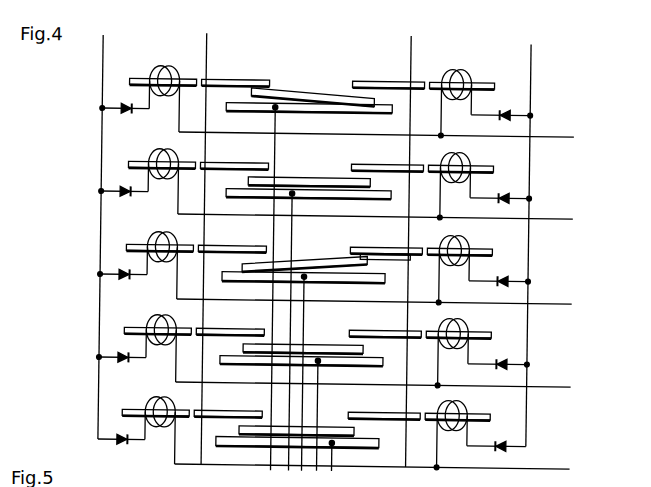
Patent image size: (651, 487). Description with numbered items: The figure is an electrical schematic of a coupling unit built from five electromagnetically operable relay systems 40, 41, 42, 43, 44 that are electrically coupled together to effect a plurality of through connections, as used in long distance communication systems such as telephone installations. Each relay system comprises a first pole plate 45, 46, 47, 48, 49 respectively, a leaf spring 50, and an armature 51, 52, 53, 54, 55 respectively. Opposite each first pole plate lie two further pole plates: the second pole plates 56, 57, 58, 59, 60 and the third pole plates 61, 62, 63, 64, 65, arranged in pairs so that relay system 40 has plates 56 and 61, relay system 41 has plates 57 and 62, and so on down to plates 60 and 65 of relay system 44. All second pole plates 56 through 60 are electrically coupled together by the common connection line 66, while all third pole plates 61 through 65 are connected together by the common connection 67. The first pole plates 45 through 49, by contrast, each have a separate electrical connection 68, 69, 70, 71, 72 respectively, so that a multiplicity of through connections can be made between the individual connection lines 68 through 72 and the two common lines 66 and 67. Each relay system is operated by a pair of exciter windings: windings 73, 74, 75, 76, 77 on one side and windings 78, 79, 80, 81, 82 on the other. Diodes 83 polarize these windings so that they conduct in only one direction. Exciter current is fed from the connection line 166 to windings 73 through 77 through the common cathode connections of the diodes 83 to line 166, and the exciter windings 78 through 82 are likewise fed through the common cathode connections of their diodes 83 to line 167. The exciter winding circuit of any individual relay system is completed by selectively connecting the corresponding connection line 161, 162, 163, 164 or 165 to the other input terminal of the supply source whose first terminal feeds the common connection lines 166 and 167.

The relay system 40 is at (313, 76).
The relay system 41 is at (309, 161).
The relay system 42 is at (325, 252).
The relay system 43 is at (302, 329).
The relay system 44 is at (325, 419).
The first pole plate 45 is at (372, 113).
The first pole plate 46 is at (380, 197).
The first pole plate 47 is at (371, 283).
The first pole plate 48 is at (380, 365).
The first pole plate 49 is at (380, 447).
The leaf spring 50 is at (333, 85).
The armature 51 is at (274, 89).
The armature 52 is at (286, 178).
The armature 53 is at (371, 262).
The armature 54 is at (264, 331).
The armature 55 is at (370, 434).
The second pole plate 56 is at (226, 81).
The second pole plate 57 is at (227, 164).
The second pole plate 58 is at (227, 247).
The second pole plate 59 is at (217, 330).
The second pole plate 60 is at (225, 412).
The third pole plate 61 is at (393, 81).
The third pole plate 62 is at (381, 164).
The third pole plate 63 is at (381, 247).
The third pole plate 64 is at (381, 330).
The third pole plate 65 is at (384, 412).
The common connection line 66 is at (205, 237).
The common connection 67 is at (408, 240).
The electrical connection 68 is at (266, 295).
The electrical connection 69 is at (289, 339).
The electrical connection 70 is at (310, 380).
The electrical connection 71 is at (327, 422).
The electrical connection 72 is at (343, 463).
The exciter winding 73 is at (147, 116).
The exciter winding 74 is at (147, 195).
The exciter winding 75 is at (147, 278).
The exciter winding 76 is at (147, 361).
The exciter winding 77 is at (147, 443).
The exciter winding 78 is at (470, 98).
The exciter winding 79 is at (470, 181).
The exciter winding 80 is at (470, 264).
The exciter winding 81 is at (470, 347).
The exciter winding 82 is at (470, 430).
The diode 83 is at (121, 273).
The connection line 161 is at (555, 134).
The connection line 162 is at (555, 216).
The connection line 163 is at (555, 301).
The connection line 164 is at (555, 384).
The connection line 165 is at (546, 466).
The connection line 166 is at (102, 58).
The line 167 is at (528, 60).